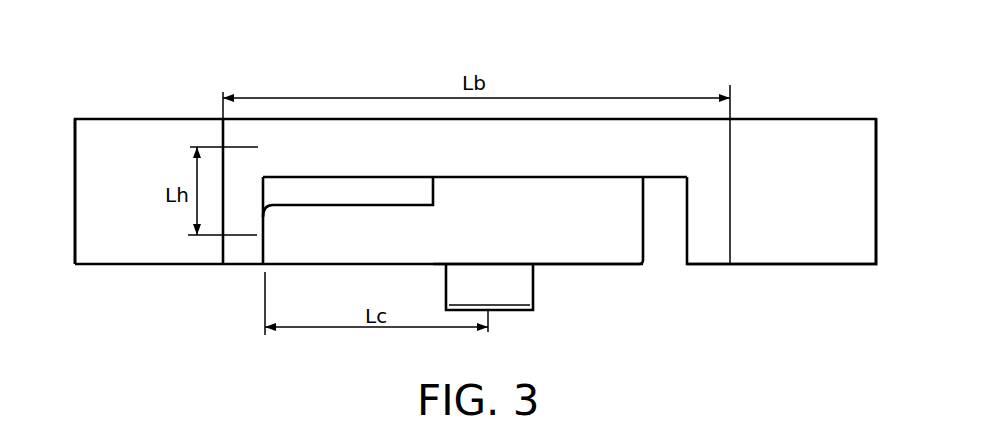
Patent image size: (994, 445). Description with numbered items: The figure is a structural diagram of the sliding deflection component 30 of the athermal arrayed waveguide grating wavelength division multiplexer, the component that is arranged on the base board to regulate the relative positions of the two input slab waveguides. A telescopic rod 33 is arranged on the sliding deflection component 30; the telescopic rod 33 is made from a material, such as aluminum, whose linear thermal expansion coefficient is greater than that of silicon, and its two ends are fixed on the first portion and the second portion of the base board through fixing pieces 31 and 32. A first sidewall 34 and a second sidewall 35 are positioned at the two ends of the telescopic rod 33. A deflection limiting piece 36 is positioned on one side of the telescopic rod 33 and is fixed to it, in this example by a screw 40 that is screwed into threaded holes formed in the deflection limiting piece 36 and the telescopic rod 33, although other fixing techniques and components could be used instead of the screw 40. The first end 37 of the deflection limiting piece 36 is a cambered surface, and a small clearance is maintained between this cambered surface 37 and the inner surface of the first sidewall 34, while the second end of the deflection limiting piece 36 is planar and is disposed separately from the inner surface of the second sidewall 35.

The sliding deflection component 30 is at (800, 96).
The fixing piece 31 is at (178, 222).
The fixing piece 32 is at (787, 242).
The telescopic rod 33 is at (262, 140).
The first sidewall 34 is at (255, 247).
The second sidewall 35 is at (708, 250).
The deflection limiting piece 36 is at (605, 247).
The first end (cambered surface) 37 is at (264, 266).
The screw 40 is at (513, 287).